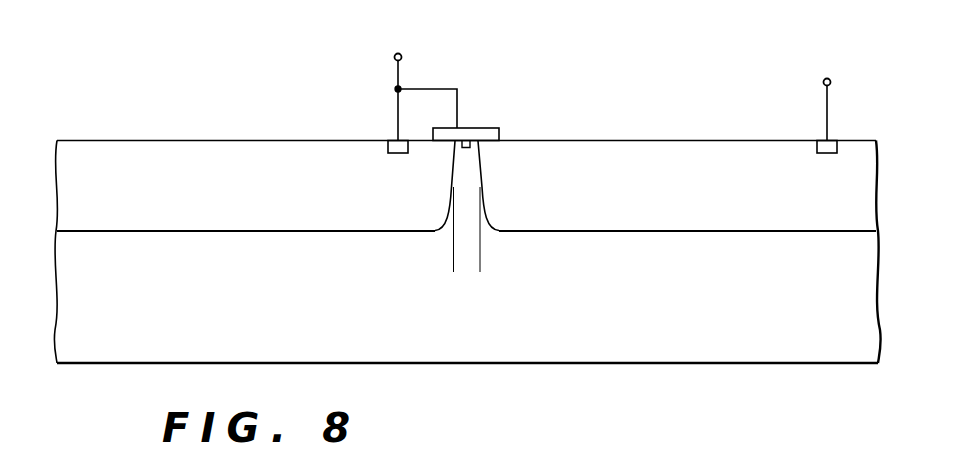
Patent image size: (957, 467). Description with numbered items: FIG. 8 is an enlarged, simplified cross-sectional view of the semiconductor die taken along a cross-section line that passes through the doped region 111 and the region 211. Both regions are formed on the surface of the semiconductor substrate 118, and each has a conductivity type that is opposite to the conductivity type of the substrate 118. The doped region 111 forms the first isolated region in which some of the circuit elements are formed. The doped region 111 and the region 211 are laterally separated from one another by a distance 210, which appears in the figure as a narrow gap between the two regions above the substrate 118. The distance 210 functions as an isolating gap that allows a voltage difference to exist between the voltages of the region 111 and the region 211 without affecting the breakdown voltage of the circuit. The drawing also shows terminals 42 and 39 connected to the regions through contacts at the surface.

The gate electrode terminal 42 is at (398, 52).
The drain terminal 39 is at (827, 77).
The distance 210 is at (420, 258).
The region 211 is at (238, 223).
The doped region 111 is at (717, 223).
The semiconductor substrate 118 is at (486, 335).